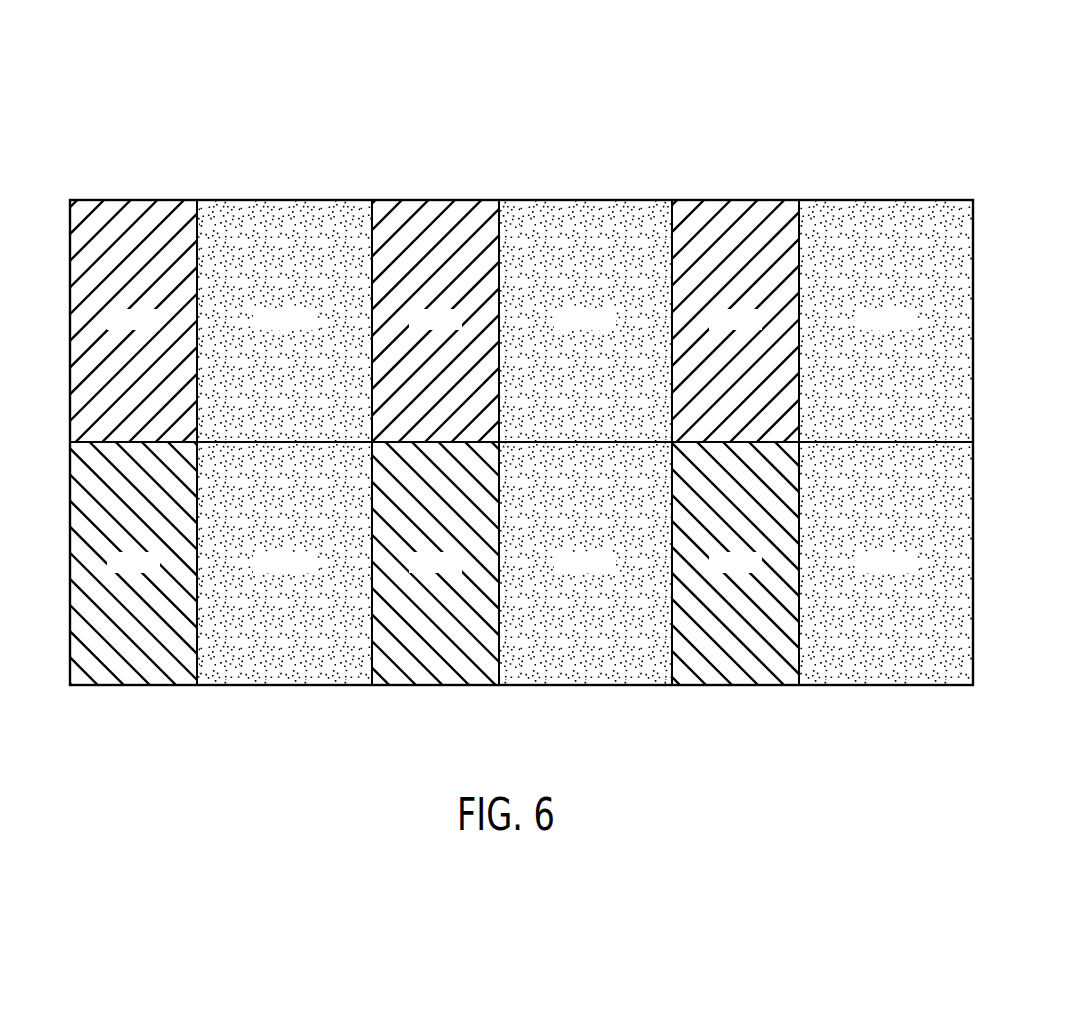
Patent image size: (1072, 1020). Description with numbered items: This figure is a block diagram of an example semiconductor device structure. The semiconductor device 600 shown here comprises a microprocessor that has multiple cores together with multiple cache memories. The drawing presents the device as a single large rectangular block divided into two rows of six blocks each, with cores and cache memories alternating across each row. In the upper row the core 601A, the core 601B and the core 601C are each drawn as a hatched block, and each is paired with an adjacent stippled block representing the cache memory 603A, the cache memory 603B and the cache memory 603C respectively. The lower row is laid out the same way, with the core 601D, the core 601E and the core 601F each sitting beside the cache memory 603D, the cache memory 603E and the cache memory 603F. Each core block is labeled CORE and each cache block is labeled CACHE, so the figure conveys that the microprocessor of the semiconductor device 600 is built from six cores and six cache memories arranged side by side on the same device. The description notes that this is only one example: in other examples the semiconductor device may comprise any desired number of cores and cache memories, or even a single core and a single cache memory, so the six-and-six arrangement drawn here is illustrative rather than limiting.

The semiconductor device 600 is at (995, 87).
The core 601A is at (135, 207).
The core 601B is at (435, 207).
The core 601C is at (735, 207).
The core 601D is at (132, 680).
The core 601E is at (435, 680).
The core 601F is at (740, 680).
The cache memory 603A is at (285, 207).
The cache memory 603B is at (585, 207).
The cache memory 603C is at (884, 207).
The cache memory 603D is at (282, 680).
The cache memory 603E is at (585, 680).
The cache memory 603F is at (890, 680).